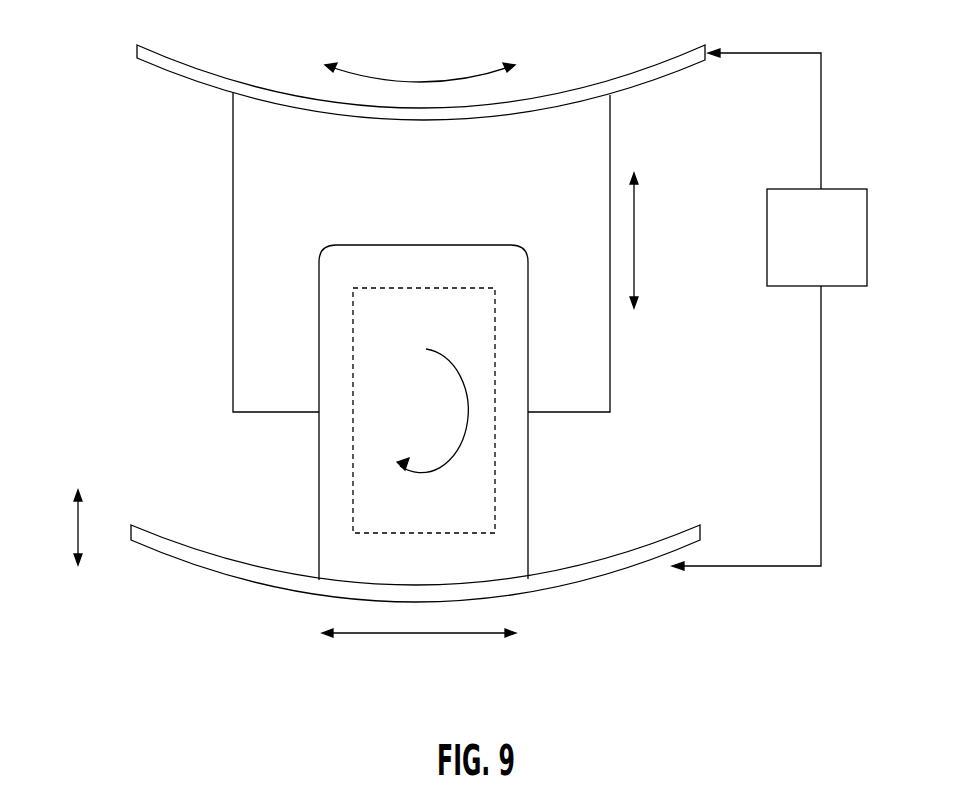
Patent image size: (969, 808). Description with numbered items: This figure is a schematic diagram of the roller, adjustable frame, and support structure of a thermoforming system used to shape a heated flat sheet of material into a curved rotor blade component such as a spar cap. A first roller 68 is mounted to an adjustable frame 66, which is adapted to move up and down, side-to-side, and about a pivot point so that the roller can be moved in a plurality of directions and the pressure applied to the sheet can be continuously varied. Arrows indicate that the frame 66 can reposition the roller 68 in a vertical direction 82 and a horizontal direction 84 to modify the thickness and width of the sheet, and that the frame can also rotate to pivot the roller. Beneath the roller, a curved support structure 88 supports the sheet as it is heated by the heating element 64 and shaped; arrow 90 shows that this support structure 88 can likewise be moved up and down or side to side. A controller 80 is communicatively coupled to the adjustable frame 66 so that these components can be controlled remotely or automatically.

The heating element 64 is at (353, 490).
The adjustable frame 66 is at (233, 178).
The first roller 68 is at (319, 463).
The controller 80 is at (867, 232).
The vertical direction 82 is at (634, 258).
The horizontal direction 84 is at (423, 635).
The curved support structure 88 is at (162, 552).
The arrow indicating movement of support structure 90 is at (78, 530).